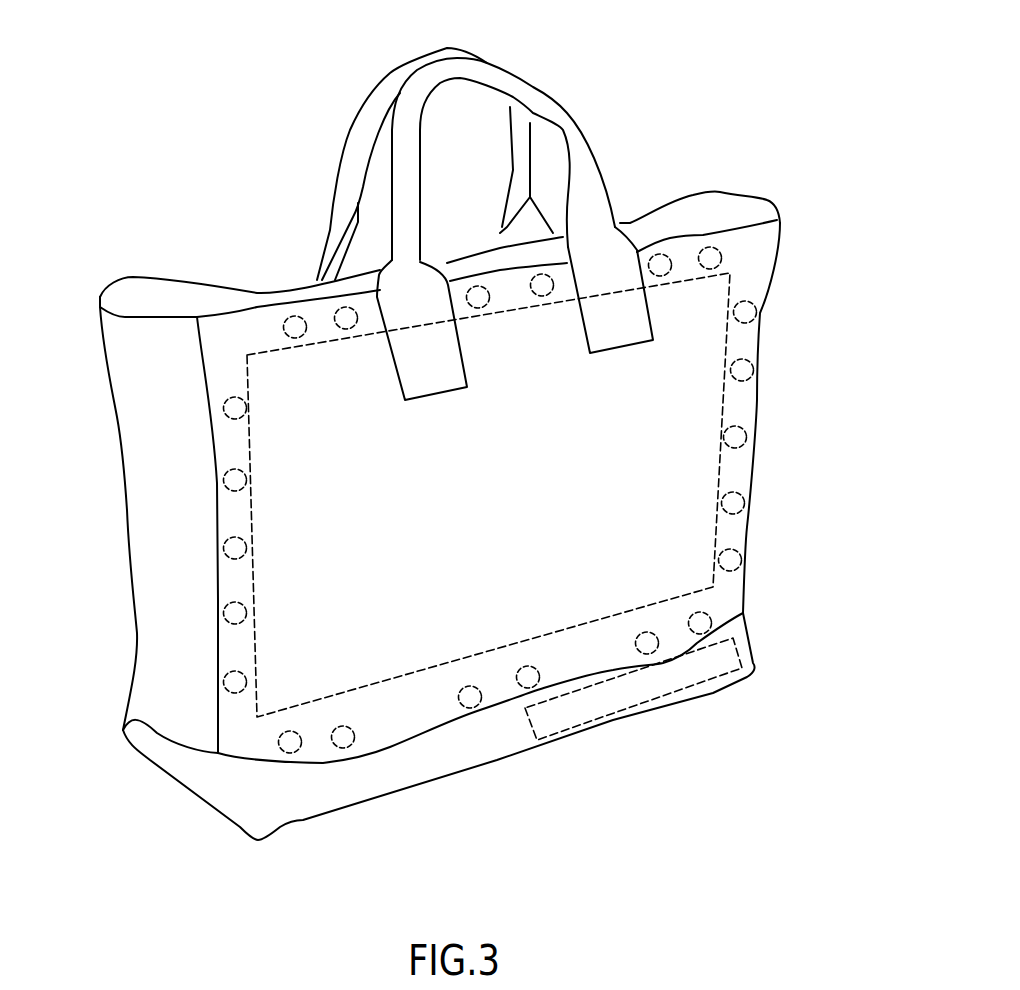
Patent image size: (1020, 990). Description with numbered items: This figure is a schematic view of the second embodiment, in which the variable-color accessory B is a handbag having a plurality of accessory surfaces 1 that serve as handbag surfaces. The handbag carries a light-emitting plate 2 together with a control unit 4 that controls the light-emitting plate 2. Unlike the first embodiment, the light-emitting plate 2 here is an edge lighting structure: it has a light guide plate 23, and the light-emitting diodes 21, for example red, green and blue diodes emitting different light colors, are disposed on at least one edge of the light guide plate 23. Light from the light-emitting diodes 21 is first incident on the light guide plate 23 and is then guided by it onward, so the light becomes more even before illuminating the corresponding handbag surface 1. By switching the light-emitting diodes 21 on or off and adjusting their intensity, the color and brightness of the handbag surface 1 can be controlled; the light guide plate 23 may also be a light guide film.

The variable-color accessory B is at (668, 97).
The accessory surface 1 is at (142, 588).
The light-emitting plate 2 is at (720, 533).
The light-emitting diodes 21 is at (740, 372).
The light guide plate 23 is at (635, 507).
The control unit 4 is at (703, 668).